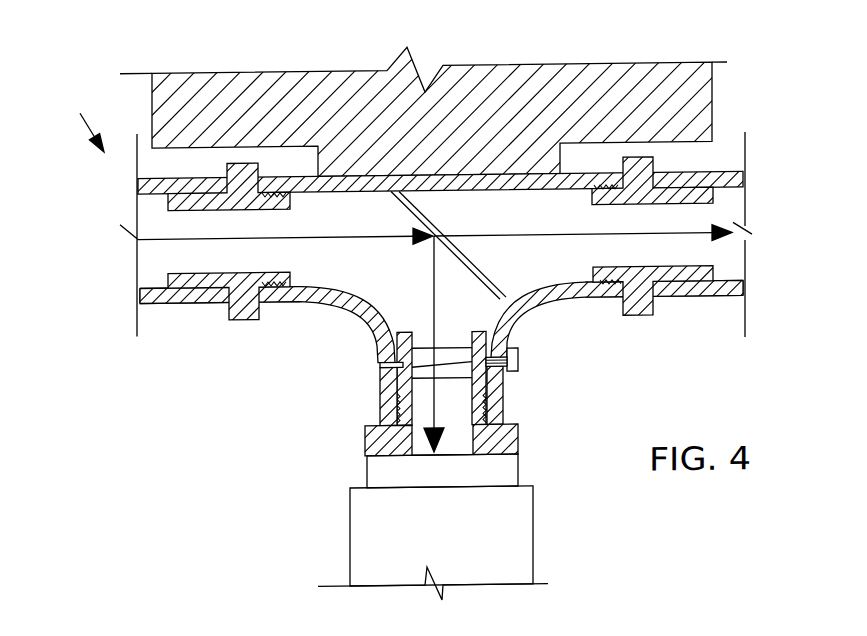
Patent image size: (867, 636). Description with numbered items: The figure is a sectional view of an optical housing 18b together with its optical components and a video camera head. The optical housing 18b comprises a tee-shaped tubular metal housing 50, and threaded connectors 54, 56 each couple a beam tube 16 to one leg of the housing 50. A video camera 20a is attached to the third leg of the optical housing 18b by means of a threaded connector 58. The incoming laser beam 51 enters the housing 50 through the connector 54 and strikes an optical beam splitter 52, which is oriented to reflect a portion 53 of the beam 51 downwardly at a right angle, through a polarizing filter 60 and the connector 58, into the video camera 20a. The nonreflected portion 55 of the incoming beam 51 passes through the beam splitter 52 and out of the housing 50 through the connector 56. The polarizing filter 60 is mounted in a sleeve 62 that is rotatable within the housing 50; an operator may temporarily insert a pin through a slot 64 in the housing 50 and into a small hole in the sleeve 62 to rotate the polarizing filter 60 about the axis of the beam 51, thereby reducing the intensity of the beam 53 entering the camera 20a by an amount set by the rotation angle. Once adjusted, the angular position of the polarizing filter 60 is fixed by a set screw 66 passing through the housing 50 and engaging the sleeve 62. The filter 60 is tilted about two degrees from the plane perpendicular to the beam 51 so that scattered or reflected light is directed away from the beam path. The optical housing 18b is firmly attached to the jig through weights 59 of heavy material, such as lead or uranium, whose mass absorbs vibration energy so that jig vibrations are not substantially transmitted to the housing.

The weight 59 is at (233, 68).
The optical housing 18b is at (76, 121).
The beam tube 16 is at (683, 179).
The optical beam splitter 52 is at (438, 225).
The laser beam 51 is at (228, 238).
The nonreflected portion of the incoming beam 55 is at (552, 239).
The reflected portion of beam 53 is at (430, 258).
The tee-shaped tubular metal housing 50 is at (348, 307).
The threaded connector 54 is at (244, 318).
The threaded connector 56 is at (642, 320).
The polarizing filter 60 is at (473, 364).
The sleeve 62 is at (397, 380).
The slot 64 is at (380, 362).
The set screw 66 is at (517, 359).
The threaded connector 58 is at (517, 436).
The video camera 20a is at (432, 526).